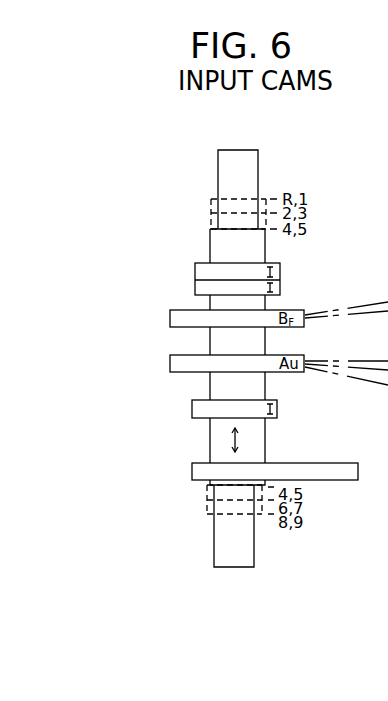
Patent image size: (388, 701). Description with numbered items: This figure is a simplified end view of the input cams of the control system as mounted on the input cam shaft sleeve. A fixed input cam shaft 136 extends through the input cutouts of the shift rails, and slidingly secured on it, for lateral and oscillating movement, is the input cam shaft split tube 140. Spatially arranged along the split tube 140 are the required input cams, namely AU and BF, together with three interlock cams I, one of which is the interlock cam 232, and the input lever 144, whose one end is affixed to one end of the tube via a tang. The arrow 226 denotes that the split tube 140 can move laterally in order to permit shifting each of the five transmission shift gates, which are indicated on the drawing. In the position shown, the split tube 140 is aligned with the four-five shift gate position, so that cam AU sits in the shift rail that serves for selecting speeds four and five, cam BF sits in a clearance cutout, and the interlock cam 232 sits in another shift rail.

The input cam shaft split tube 140 is at (207, 430).
The input cam shaft 136 is at (240, 552).
The interlock cam 232 is at (280, 283).
The arrow 226 is at (237, 440).
The input lever 144 is at (348, 470).